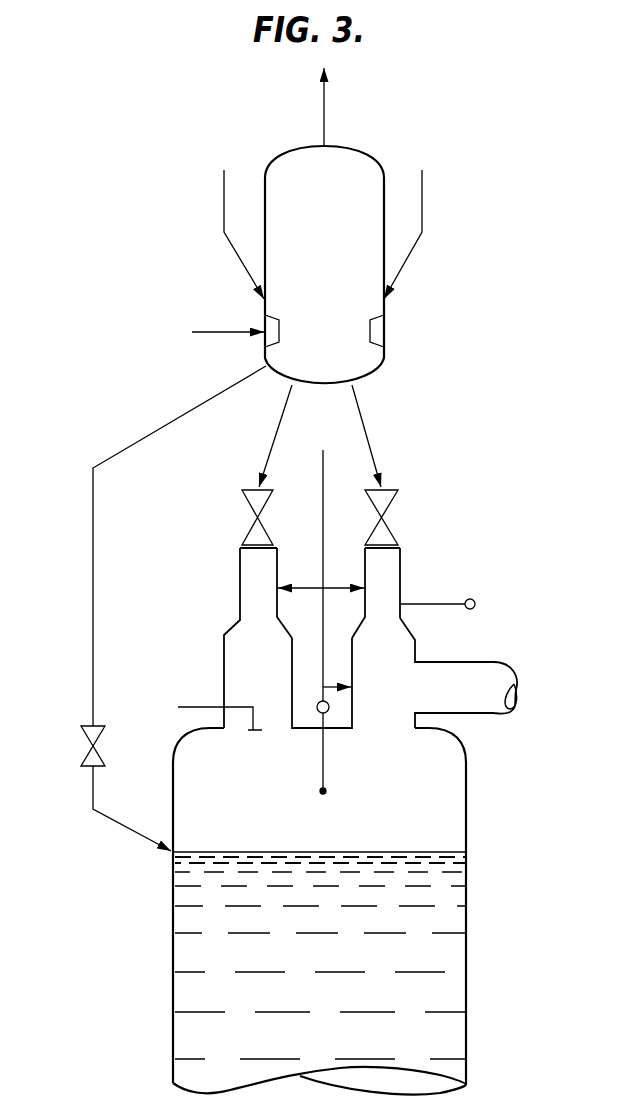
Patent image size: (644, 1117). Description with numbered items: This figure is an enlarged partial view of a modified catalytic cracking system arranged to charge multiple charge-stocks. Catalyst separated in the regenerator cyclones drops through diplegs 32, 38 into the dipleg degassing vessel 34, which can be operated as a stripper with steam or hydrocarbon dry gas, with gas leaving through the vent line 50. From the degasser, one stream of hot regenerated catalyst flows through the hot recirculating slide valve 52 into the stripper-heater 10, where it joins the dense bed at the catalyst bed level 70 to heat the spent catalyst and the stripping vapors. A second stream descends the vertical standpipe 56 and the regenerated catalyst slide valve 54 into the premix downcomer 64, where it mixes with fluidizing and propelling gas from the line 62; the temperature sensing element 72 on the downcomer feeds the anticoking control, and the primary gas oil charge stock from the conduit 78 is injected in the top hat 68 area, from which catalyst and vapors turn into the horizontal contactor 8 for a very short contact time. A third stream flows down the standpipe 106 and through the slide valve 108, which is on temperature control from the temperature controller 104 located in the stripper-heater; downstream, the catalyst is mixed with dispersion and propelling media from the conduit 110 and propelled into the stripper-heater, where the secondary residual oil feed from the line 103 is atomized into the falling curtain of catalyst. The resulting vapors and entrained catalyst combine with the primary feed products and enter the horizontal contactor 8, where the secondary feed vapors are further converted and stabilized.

The horizontal contactor 8 is at (492, 661).
The stripper-heater 10 is at (469, 961).
The dipleg 32 is at (224, 240).
The dipleg degassing vessel 34 is at (336, 243).
The dipleg 38 is at (422, 246).
The vent line 50 is at (326, 117).
The hot recirculating slide valve 52 is at (79, 746).
The regenerated catalyst slide valve 54 is at (400, 526).
The vertical standpipe 56 is at (371, 430).
The fluidizing/propelling media line 62 is at (324, 478).
The premix downcomer 64 is at (402, 571).
The top hat 68 is at (416, 646).
The stripper-heater catalyst bed level 70 is at (241, 851).
The temperature sensing element 72 is at (451, 605).
The conduit 78 is at (324, 646).
The line 103 is at (196, 707).
The temperature controller 104 is at (317, 704).
The standpipe 106 is at (268, 440).
The slide valve 108 is at (246, 538).
The conduit 110 is at (305, 590).